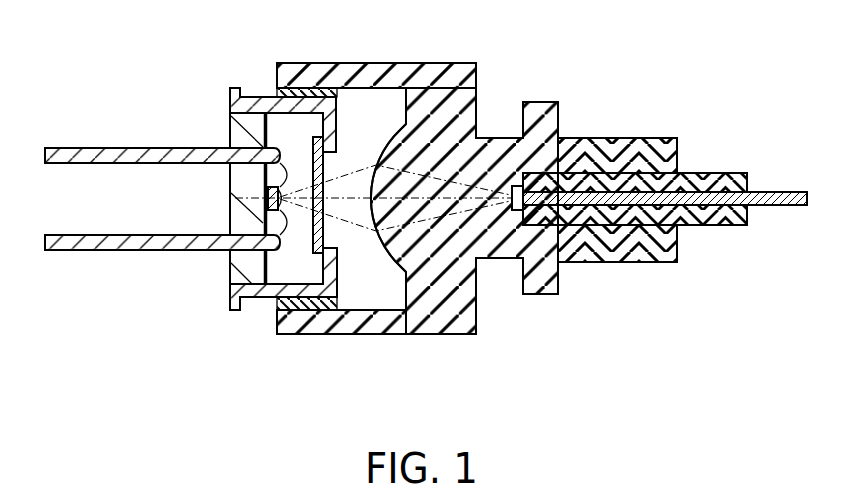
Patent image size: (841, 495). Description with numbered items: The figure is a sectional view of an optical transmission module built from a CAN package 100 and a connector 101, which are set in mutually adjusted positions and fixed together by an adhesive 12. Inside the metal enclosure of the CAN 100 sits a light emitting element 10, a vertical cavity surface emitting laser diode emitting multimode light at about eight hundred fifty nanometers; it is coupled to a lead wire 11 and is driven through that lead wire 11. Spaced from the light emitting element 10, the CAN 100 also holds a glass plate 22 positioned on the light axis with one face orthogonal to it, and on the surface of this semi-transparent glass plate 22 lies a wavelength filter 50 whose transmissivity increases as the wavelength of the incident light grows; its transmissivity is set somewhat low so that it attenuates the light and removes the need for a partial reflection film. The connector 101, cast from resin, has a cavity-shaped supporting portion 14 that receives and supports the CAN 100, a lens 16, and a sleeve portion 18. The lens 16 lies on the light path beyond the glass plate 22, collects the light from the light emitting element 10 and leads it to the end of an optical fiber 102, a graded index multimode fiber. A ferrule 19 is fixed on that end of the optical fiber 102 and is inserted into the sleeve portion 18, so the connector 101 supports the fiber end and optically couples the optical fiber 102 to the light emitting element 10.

The light emitting element 10 is at (267, 195).
The lead wire 11 is at (143, 156).
The adhesive 12 is at (297, 87).
The supporting portion 14 is at (343, 329).
The lens 16 is at (400, 262).
The sleeve portion 18 is at (597, 257).
The ferrule 19 is at (578, 180).
The glass plate 22 is at (323, 163).
The wavelength filter 50 is at (283, 250).
The CAN package 100 is at (257, 97).
The connector 101 is at (478, 86).
The optical fiber 102 is at (703, 190).